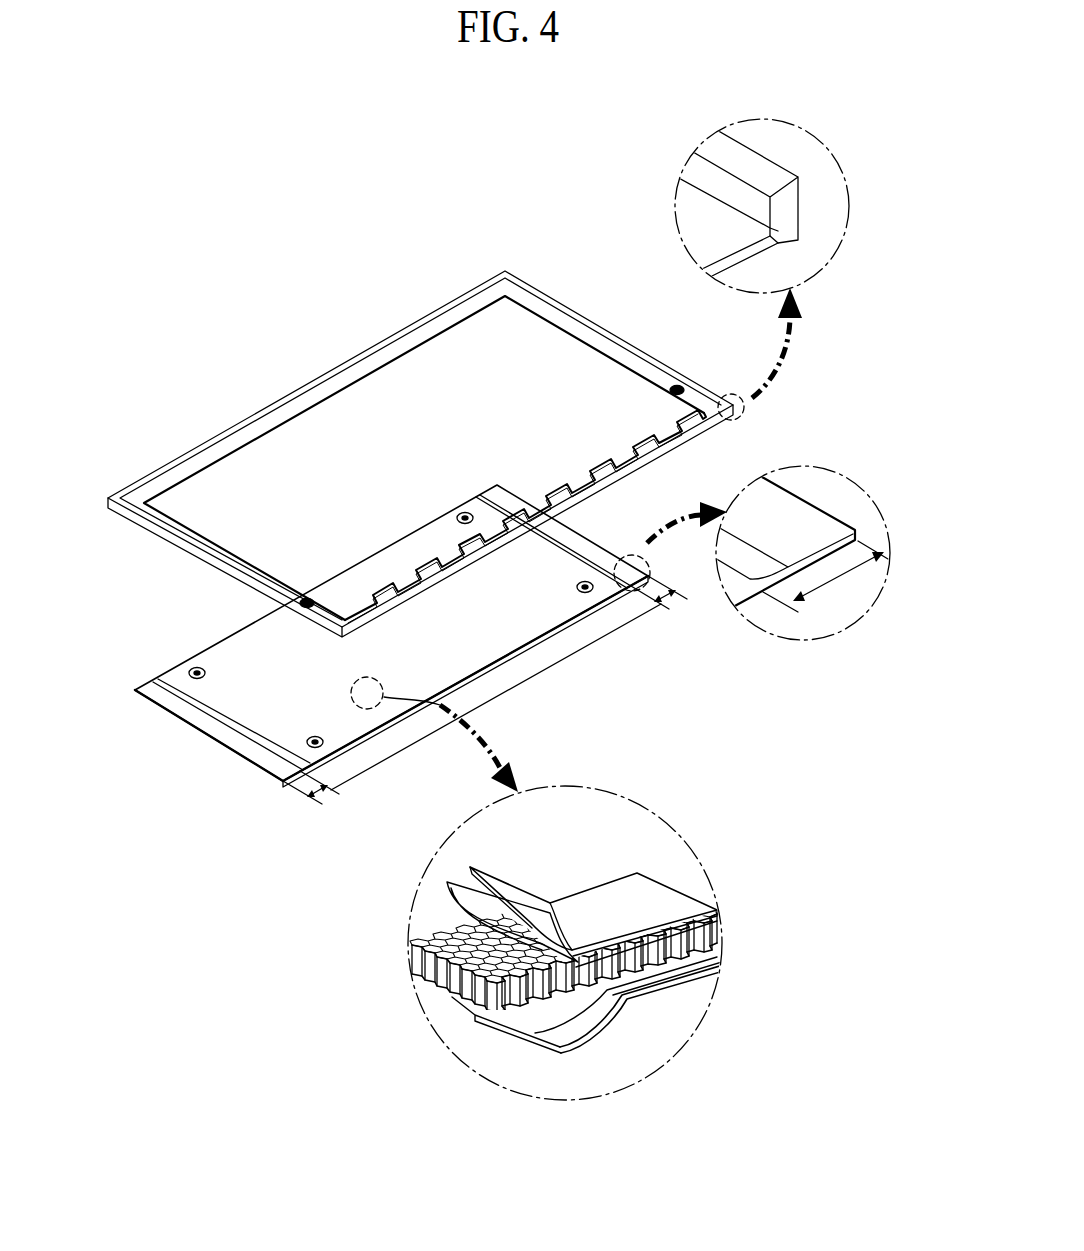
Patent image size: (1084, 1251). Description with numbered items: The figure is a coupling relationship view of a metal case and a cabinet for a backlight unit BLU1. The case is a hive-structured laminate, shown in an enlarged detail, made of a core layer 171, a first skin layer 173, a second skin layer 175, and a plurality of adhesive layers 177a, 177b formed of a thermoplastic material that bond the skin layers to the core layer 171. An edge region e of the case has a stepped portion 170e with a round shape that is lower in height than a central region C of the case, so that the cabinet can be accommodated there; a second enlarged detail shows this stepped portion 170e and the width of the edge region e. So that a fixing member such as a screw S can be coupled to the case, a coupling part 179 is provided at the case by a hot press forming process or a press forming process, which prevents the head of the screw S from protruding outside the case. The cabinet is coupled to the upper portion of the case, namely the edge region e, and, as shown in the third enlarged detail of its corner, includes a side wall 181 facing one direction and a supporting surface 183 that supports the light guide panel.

The backlight unit BLU1 is at (211, 307).
The screw S is at (307, 735).
The stepped portion 170e is at (217, 715).
The coupling part 179 is at (308, 742).
The side wall 181 is at (783, 212).
The supporting surface 183 is at (735, 248).
The core layer 171 is at (453, 970).
The first skin layer 173 is at (480, 882).
The adhesive layer 177a is at (467, 900).
The adhesive layer 177b is at (527, 1015).
The second skin layer 175 is at (548, 1037).
The edge region e is at (485, 694).
The central region C is at (496, 697).